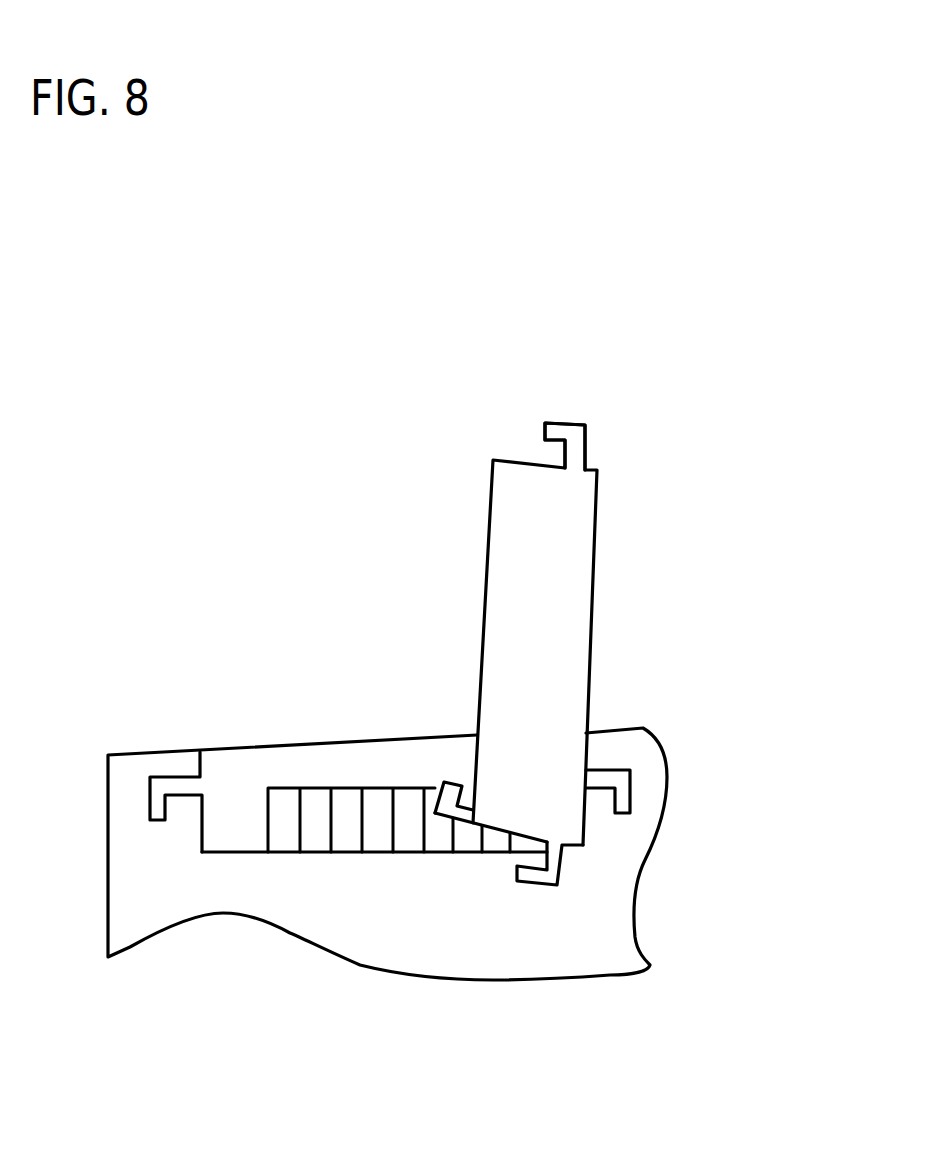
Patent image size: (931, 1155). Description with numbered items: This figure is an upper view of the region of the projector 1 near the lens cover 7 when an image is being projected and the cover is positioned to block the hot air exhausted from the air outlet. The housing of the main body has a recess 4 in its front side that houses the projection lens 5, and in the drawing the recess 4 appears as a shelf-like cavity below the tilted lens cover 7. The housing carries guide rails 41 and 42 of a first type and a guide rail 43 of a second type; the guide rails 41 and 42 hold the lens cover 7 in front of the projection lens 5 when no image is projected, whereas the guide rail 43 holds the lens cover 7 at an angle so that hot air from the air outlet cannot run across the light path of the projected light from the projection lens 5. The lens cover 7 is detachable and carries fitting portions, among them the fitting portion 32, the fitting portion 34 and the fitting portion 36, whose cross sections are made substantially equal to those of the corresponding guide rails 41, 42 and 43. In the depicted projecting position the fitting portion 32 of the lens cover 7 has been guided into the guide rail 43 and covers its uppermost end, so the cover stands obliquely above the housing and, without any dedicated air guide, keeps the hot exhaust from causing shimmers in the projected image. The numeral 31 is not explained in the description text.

The projector 1 is at (288, 519).
The recess 4 is at (313, 743).
The projection lens 5 is at (345, 820).
The lens cover 7 is at (626, 683).
The connector body 31 is at (572, 572).
The fitting portion 32 is at (667, 906).
The fitting portion 34 is at (575, 432).
The fitting portion 36 is at (433, 783).
The guide rail 41 is at (622, 782).
The guide rail 42 is at (179, 782).
The guide rail 43 is at (553, 882).